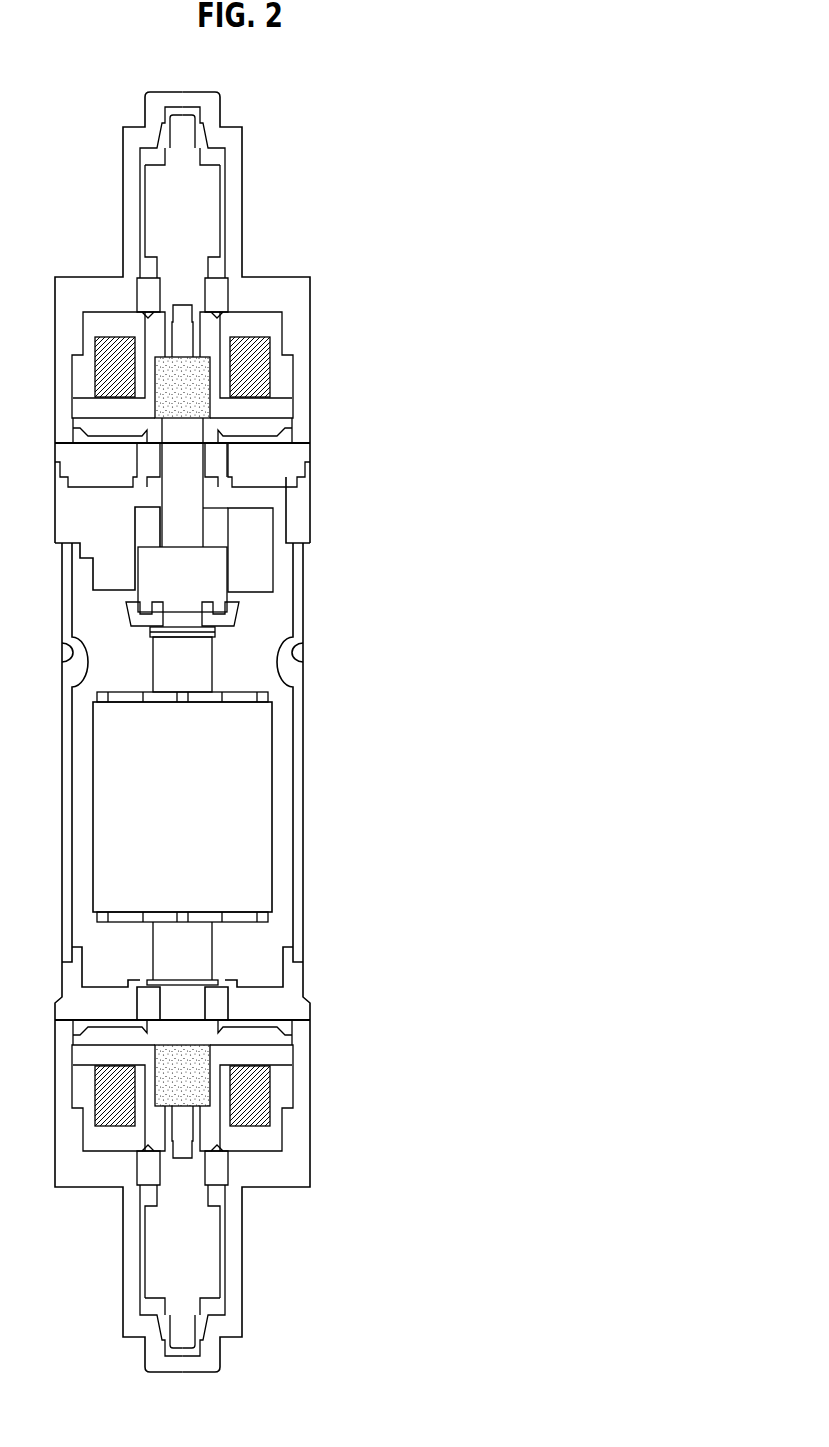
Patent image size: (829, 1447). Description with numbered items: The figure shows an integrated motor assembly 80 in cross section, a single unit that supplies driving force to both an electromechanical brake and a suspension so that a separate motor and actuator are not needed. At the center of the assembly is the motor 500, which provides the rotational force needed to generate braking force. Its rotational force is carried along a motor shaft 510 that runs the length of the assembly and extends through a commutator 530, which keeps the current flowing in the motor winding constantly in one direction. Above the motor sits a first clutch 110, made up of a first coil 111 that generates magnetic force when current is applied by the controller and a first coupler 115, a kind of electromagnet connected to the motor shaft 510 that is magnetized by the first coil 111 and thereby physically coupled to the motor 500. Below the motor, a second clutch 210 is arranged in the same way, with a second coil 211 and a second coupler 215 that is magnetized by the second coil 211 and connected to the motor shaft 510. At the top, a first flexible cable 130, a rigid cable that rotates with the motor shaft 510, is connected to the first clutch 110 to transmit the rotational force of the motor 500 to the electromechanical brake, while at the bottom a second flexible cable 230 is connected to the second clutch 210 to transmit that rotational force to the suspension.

The integrated motor assembly 80 is at (418, 147).
The first flexible cable 130 is at (202, 208).
The first clutch 110 is at (256, 360).
The first coil 111 is at (270, 347).
The first coupler 115 is at (197, 402).
The motor shaft 510 is at (190, 498).
The commutator 530 is at (212, 575).
The motor 500 is at (238, 810).
The second clutch 210 is at (256, 1102).
The second coil 211 is at (268, 1117).
The second coupler 215 is at (195, 1065).
The second flexible cable 230 is at (195, 1258).